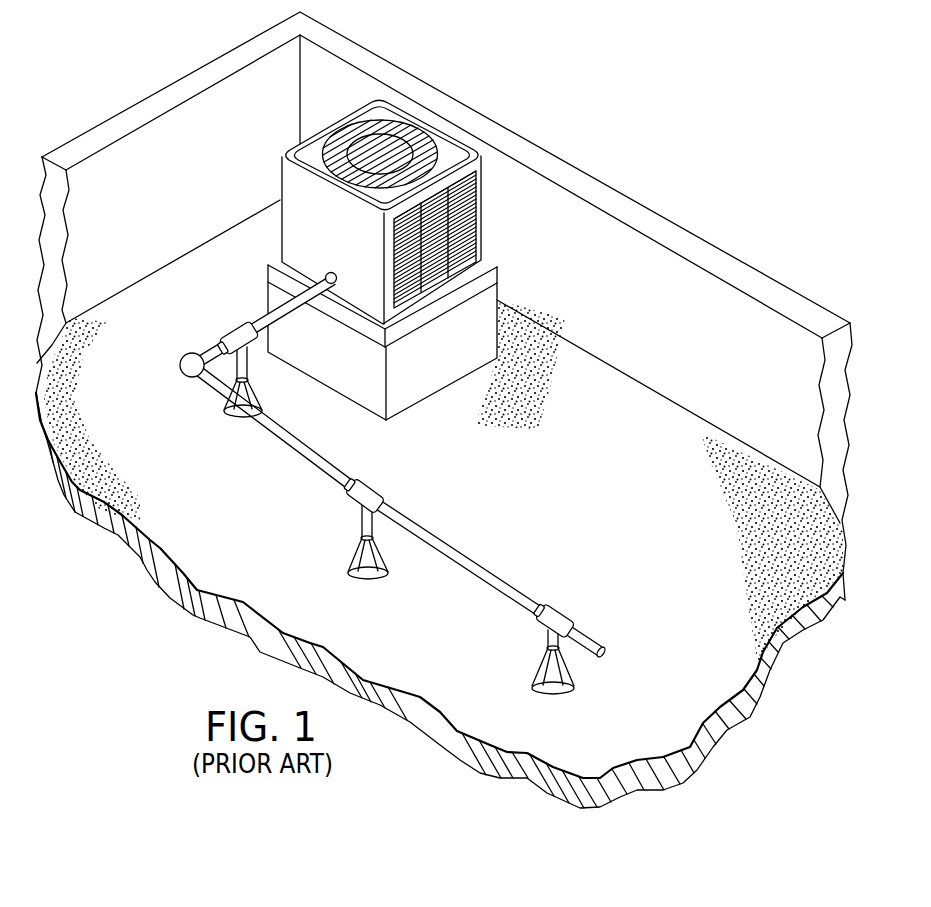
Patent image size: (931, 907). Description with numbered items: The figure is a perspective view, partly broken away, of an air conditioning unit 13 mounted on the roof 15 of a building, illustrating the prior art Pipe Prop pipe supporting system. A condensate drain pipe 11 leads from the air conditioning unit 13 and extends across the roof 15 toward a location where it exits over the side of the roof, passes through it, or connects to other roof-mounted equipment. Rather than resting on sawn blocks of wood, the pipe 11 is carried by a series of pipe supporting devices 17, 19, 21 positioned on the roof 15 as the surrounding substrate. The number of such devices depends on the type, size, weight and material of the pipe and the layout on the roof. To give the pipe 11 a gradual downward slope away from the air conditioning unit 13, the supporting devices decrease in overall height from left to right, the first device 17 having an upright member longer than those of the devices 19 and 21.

The pipe 11 is at (462, 552).
The air conditioning unit 13 is at (290, 190).
The roof 15 is at (590, 481).
The pipe supporting device 17 is at (233, 432).
The pipe supporting device 19 is at (372, 580).
The pipe supporting device 21 is at (556, 700).